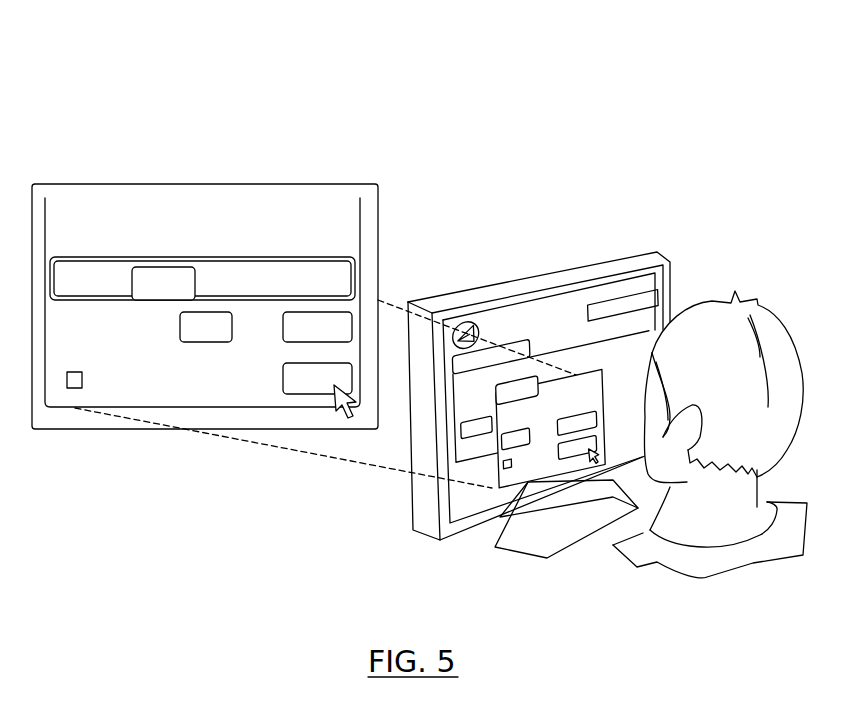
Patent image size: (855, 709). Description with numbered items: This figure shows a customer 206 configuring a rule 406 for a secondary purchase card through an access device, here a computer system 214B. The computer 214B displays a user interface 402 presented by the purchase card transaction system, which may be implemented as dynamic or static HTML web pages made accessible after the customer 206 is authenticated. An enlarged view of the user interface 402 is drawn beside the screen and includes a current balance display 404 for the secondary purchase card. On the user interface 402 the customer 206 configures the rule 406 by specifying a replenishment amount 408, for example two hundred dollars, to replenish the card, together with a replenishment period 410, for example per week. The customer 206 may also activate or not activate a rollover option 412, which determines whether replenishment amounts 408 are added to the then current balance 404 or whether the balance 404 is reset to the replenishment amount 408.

The user interface 402 is at (122, 184).
The current balance display 404 is at (332, 258).
The rule 406 is at (176, 267).
The replenishment amount 408 is at (122, 337).
The replenishment period 410 is at (280, 312).
The rollover option 412 is at (75, 388).
The computer system 214B is at (533, 278).
The customer 206 is at (713, 542).